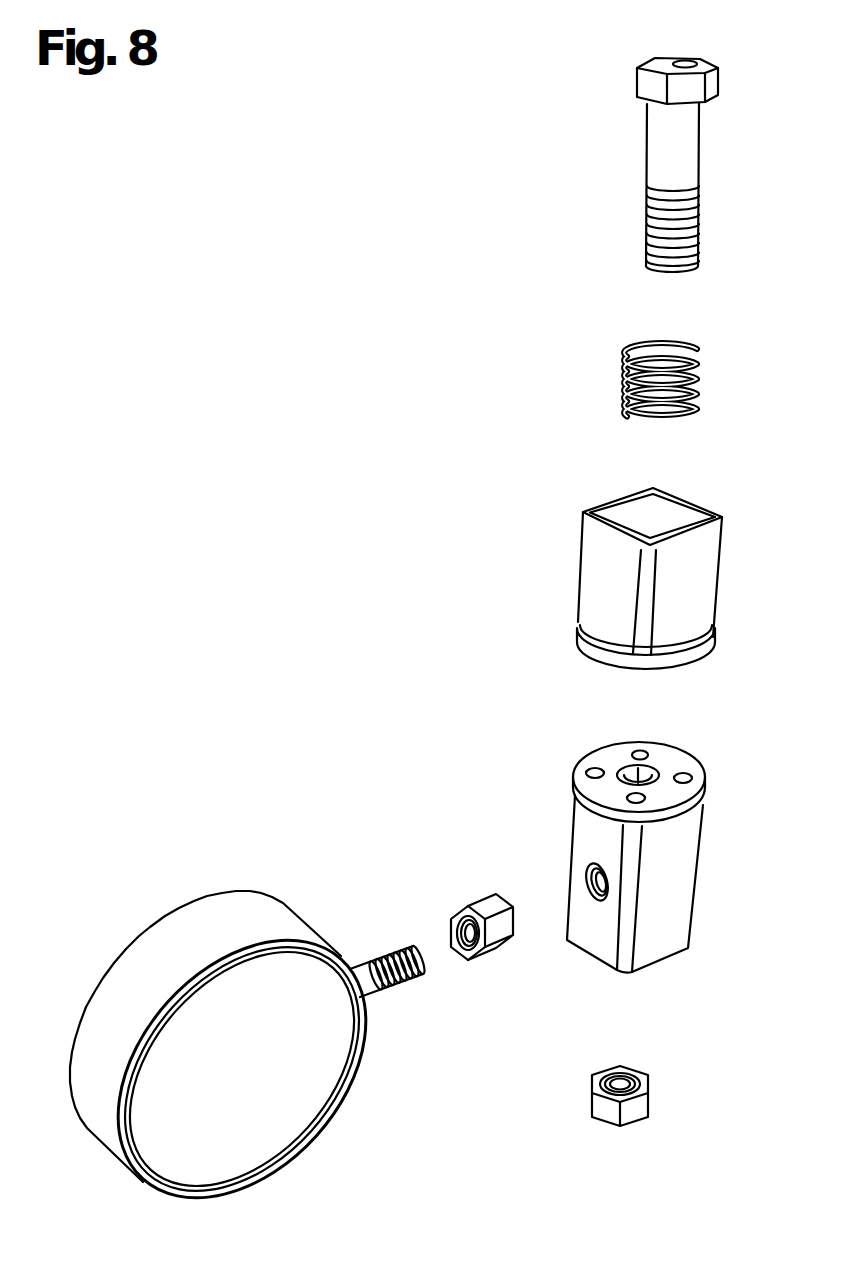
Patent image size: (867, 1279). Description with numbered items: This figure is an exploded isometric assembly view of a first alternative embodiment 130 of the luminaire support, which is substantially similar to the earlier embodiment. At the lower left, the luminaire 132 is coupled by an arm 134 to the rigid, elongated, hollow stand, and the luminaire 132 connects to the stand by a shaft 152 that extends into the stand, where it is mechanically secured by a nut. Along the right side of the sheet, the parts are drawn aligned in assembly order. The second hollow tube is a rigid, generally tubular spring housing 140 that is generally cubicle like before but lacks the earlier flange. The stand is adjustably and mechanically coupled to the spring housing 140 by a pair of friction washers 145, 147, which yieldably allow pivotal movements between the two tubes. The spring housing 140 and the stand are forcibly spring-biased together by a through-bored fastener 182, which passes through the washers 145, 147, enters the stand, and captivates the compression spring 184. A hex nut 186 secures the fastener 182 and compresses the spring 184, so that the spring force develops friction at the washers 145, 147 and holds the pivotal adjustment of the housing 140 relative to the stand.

The first alternative embodiment 130 is at (330, 567).
The luminaire 132 is at (142, 918).
The arm 134 is at (507, 873).
The spring housing 140 is at (574, 548).
The friction washer 145 is at (592, 650).
The friction washer 147 is at (592, 762).
The shaft 152 is at (413, 987).
The through-bored fastener 182 is at (633, 166).
The compression spring 184 is at (622, 378).
The hex nut 186 is at (590, 1096).